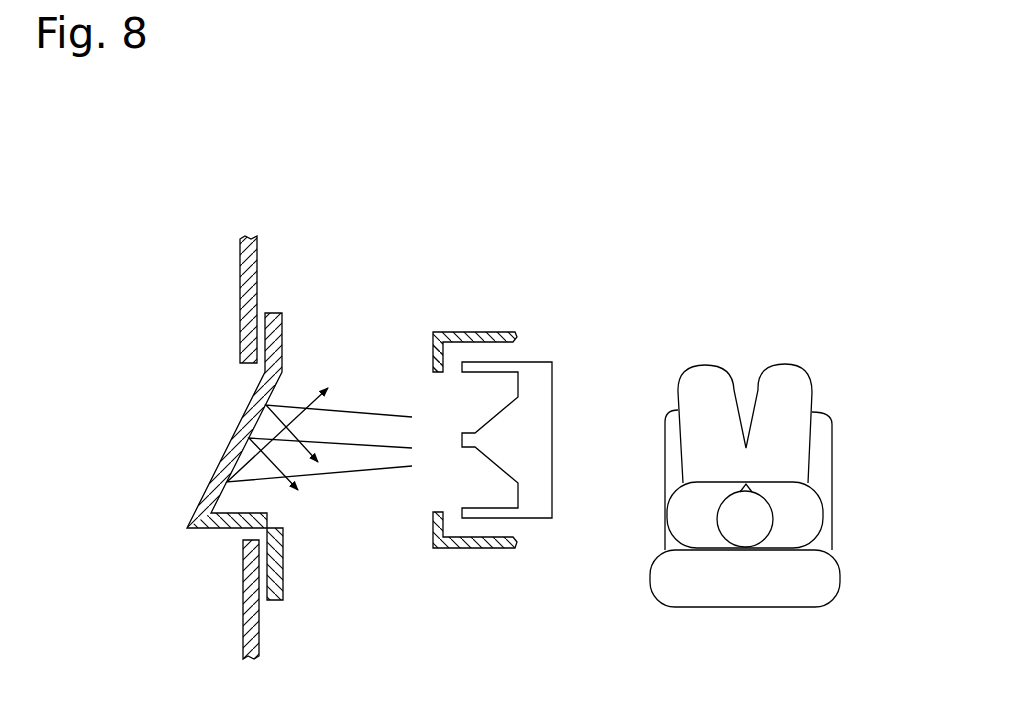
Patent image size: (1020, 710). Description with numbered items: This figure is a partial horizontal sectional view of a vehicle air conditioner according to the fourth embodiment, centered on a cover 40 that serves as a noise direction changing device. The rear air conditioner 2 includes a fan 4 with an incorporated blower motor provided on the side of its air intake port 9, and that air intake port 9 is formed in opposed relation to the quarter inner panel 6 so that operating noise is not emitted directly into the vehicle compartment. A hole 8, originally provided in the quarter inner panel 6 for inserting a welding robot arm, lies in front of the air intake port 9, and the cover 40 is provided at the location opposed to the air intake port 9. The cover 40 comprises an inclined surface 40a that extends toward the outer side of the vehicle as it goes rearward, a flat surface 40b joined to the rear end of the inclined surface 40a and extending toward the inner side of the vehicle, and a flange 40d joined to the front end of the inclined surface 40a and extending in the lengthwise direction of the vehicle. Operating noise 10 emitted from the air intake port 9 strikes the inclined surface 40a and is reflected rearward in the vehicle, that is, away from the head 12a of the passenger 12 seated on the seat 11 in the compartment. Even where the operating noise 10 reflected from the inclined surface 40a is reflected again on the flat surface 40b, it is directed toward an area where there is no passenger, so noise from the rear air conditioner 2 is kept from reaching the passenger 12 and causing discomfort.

The rear air conditioner 2 is at (457, 399).
The fan 4 is at (538, 405).
The quarter inner panel 6 is at (250, 273).
The hole 8 is at (249, 368).
The air intake port 9 is at (433, 372).
The operating noise 10 is at (412, 417).
The seat 11 is at (777, 485).
The passenger 12 is at (792, 442).
The head 12a is at (753, 521).
The cover 40 is at (224, 447).
The inclined surface 40a is at (243, 425).
The flat surface 40b is at (220, 530).
The flange 40d is at (275, 338).